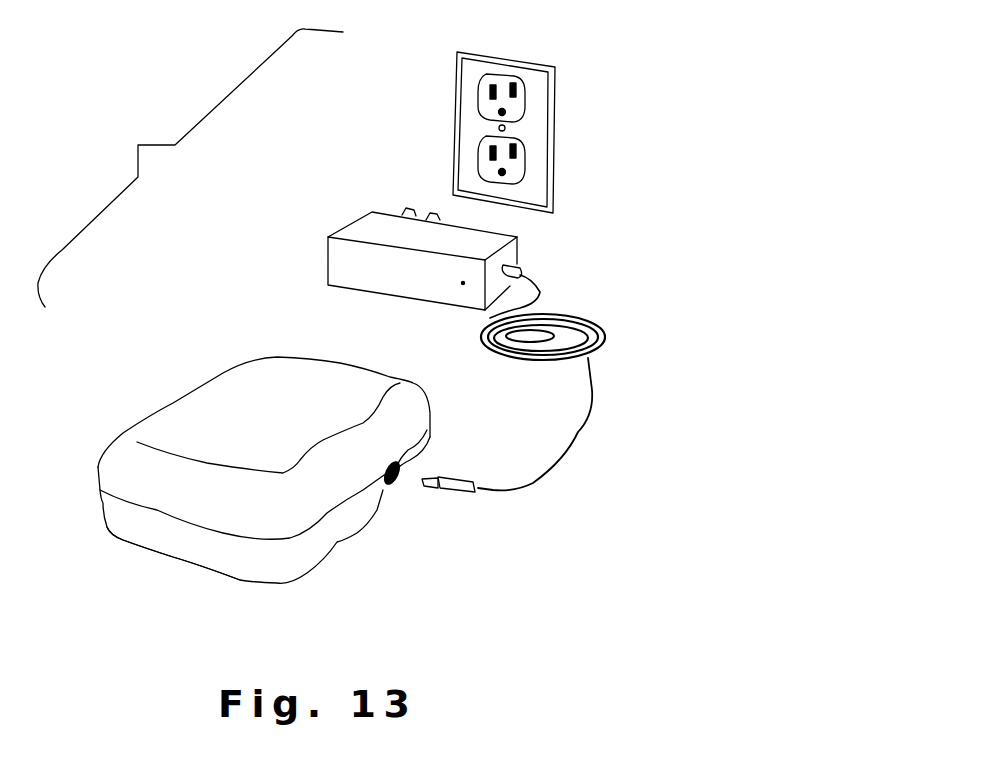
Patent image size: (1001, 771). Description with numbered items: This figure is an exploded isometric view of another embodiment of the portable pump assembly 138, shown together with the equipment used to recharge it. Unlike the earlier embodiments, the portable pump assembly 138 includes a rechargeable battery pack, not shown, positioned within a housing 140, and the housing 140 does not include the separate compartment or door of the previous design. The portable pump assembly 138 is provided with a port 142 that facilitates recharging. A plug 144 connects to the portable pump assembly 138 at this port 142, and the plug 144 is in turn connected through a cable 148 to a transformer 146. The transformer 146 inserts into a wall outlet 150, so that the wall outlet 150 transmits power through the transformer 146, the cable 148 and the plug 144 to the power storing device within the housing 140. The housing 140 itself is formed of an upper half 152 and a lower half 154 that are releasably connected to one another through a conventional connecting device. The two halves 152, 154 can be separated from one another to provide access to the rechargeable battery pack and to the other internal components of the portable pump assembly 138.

The portable pump assembly 138 is at (208, 364).
The housing 140 is at (338, 540).
The port 142 is at (388, 483).
The plug 144 is at (448, 476).
The transformer 146 is at (365, 268).
The cable 148 is at (590, 392).
The wall outlet 150 is at (545, 125).
The upper half 152 is at (118, 458).
The lower half 154 is at (153, 537).